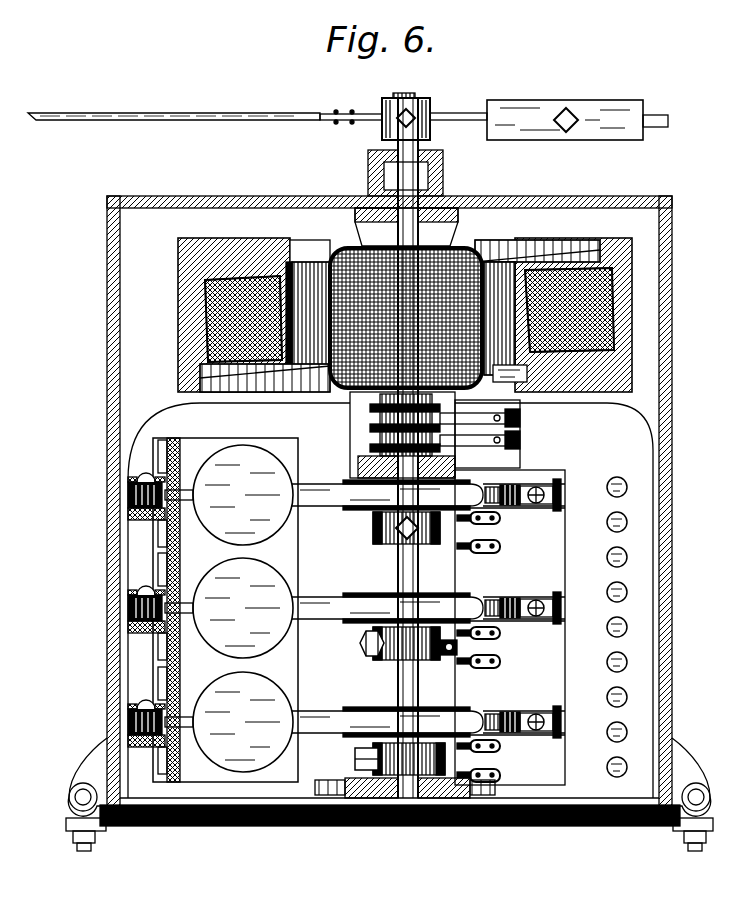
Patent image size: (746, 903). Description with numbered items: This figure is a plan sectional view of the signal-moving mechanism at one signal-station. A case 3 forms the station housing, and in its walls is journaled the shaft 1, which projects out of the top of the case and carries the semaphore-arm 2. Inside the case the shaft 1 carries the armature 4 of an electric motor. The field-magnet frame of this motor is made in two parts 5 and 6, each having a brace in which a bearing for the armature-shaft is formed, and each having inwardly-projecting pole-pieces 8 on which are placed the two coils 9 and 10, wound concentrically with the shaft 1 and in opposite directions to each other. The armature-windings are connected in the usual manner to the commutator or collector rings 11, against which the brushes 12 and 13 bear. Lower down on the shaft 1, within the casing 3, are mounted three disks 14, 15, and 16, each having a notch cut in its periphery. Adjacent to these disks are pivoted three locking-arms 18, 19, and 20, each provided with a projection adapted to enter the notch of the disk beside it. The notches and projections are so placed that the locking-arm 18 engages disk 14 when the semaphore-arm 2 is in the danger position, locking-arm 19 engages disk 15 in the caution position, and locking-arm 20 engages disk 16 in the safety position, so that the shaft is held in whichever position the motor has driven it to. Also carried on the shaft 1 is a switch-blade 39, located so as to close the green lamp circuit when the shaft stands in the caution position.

The shaft 1 is at (418, 568).
The semaphore-arm 2 is at (271, 119).
The case 3 is at (120, 348).
The armature 4 is at (406, 305).
The field-magnet frame part 5 is at (632, 249).
The field-magnet frame part 6 is at (622, 366).
The pole-pieces 8 is at (289, 334).
The coil 9 is at (622, 286).
The coil 10 is at (617, 340).
The commutator or collector rings 11 is at (402, 430).
The brush 12 is at (514, 441).
The brush 13 is at (514, 418).
The disk 14 is at (354, 705).
The disk 15 is at (354, 591).
The disk 16 is at (350, 482).
The locking-arm 18 is at (322, 720).
The locking-arm 19 is at (322, 606).
The locking-arm 20 is at (322, 493).
The switch-blade 39 is at (448, 657).